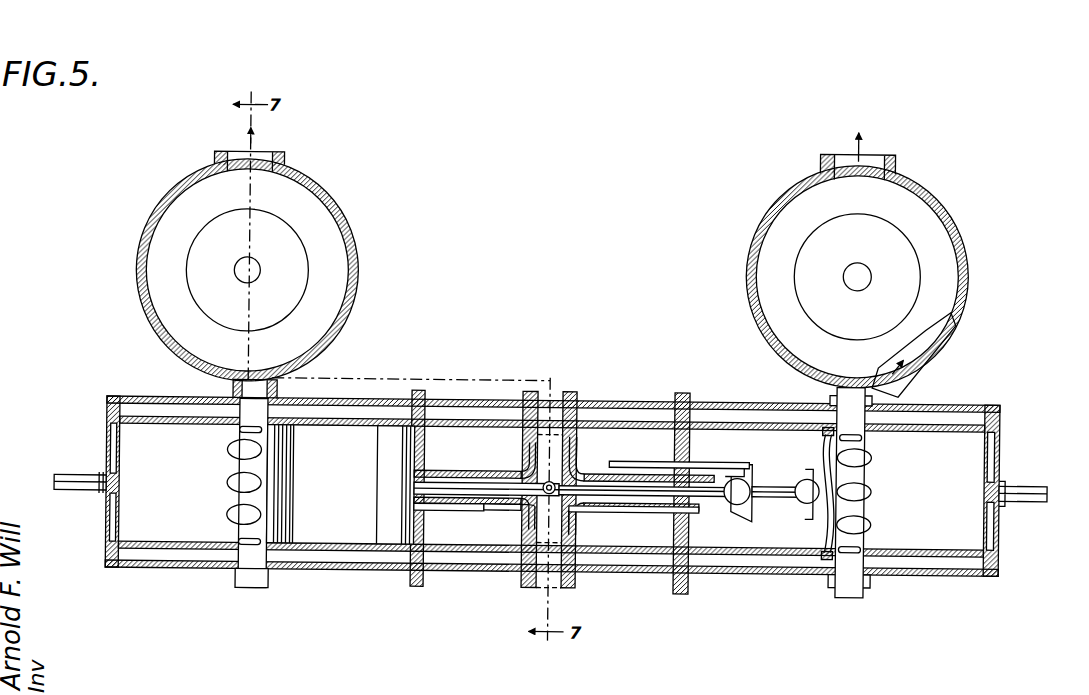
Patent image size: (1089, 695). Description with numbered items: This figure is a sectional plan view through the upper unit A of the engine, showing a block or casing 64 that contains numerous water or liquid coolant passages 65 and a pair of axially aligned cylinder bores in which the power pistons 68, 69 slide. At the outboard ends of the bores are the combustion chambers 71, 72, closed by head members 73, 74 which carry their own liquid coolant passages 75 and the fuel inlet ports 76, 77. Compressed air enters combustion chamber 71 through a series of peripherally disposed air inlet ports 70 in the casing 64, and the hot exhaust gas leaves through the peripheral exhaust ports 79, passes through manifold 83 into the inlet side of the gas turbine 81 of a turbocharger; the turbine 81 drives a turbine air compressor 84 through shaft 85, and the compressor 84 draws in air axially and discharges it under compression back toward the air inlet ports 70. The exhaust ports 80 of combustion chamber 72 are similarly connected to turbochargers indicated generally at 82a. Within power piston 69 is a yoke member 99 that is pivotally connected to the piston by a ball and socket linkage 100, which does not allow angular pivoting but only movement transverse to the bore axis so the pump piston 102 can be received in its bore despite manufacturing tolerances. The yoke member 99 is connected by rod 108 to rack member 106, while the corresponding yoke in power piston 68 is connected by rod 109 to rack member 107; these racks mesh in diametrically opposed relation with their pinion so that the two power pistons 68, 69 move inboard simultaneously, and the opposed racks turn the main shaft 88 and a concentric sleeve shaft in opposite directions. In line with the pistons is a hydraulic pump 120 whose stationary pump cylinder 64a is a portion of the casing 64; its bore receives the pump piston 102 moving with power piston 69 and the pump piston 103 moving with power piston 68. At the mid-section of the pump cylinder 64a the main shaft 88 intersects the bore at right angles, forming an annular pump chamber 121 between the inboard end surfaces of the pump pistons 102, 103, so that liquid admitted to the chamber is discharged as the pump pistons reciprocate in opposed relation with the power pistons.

The casing 64 is at (175, 565).
The pump cylinder 64a is at (462, 467).
The liquid coolant passages 65 is at (158, 415).
The power piston 68 is at (378, 518).
The power piston 69 is at (822, 445).
The air inlet ports 70 is at (240, 428).
The combustion chamber 71 is at (138, 524).
The combustion chamber 72 is at (960, 533).
The head member 73 is at (108, 508).
The head member 74 is at (998, 470).
The liquid coolant passages 75 is at (112, 432).
The fuel inlet port 76 is at (72, 477).
The fuel inlet port 77 is at (1030, 488).
The exhaust ports 79 is at (230, 514).
The exhaust ports 80 is at (872, 484).
The gas turbine 81 is at (342, 207).
The turbochargers 82a is at (950, 205).
The manifold 83 is at (228, 394).
The turbine air compressor 84 is at (205, 185).
The shaft 85 is at (238, 274).
The main shaft 88 is at (553, 481).
The yoke member 99 is at (750, 468).
The ball and socket linkage 100 is at (775, 492).
The pump piston 102 is at (650, 490).
The pump piston 103 is at (478, 492).
The rack member 106 is at (585, 466).
The rack member 107 is at (583, 506).
The rod 108 is at (650, 458).
The rod 109 is at (440, 508).
The hydraulic pump 120 is at (705, 507).
The pump chamber 121 is at (528, 500).
The upper unit A is at (748, 569).